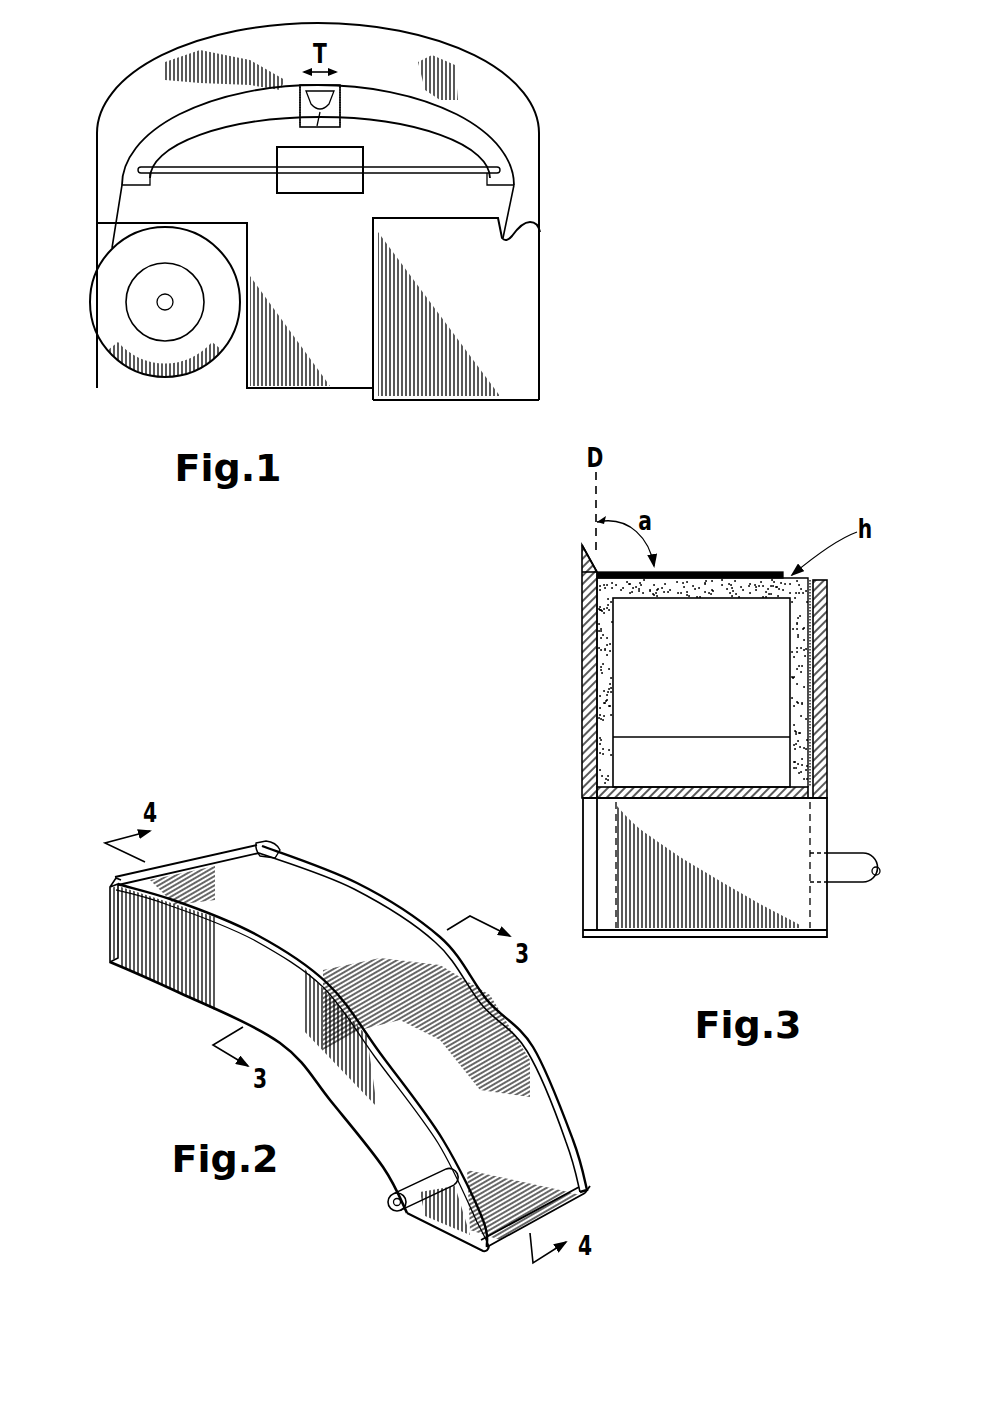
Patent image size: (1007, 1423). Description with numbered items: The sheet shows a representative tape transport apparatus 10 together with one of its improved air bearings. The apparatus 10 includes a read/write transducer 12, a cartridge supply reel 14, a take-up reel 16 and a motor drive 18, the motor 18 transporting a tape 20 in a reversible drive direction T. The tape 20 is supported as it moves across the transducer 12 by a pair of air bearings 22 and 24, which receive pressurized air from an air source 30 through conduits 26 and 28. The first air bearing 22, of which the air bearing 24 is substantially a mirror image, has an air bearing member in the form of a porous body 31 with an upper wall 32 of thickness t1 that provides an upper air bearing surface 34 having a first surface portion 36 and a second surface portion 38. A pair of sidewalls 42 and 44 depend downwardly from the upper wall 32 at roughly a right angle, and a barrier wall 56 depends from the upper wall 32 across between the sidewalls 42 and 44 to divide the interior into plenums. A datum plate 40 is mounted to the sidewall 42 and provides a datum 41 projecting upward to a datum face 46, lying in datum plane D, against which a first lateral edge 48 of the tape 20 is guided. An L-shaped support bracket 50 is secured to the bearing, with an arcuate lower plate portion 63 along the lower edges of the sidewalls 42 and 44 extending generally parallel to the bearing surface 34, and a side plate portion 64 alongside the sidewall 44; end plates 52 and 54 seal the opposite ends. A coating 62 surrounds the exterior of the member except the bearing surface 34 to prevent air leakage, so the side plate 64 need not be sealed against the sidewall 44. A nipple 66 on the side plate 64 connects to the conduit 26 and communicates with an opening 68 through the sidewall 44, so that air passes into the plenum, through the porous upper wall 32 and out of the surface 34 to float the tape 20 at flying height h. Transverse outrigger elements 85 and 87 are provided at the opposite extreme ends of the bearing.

In FIG. 1, the tape transport apparatus 10 is at (582, 107).
In FIG. 1, the read/write transducer 12 is at (322, 116).
In FIG. 1, the cartridge supply reel 14 is at (517, 298).
In FIG. 1, the take-up reel 16 is at (188, 353).
In FIG. 1, the motor drive 18 is at (232, 247).
In FIG. 1, the tape 20 is at (110, 205).
In FIG. 3, the tape 20 is at (707, 572).
In FIG. 1, the air bearing 22 is at (443, 118).
In FIG. 2, the air bearing 22 is at (370, 821).
In FIG. 3, the air bearing 22 is at (782, 490).
In FIG. 1, the air bearing 24 is at (200, 113).
In FIG. 1, the conduit 26 is at (380, 170).
In FIG. 1, the conduit 28 is at (177, 170).
In FIG. 1, the air source 30 is at (307, 183).
In FIG. 3, the porous body 31 is at (639, 606).
In FIG. 2, the upper wall 32 is at (513, 1045).
In FIG. 3, the upper wall 32 is at (692, 593).
In FIG. 2, the upper air bearing surface 34 is at (340, 920).
In FIG. 2, the first surface portion 36 is at (497, 1162).
In FIG. 2, the second surface portion 38 is at (247, 911).
In FIG. 2, the datum plate 40 is at (573, 1133).
In FIG. 3, the datum plate 40 is at (582, 618).
In FIG. 3, the datum 41 is at (582, 572).
In FIG. 3, the sidewall 42 is at (582, 697).
In FIG. 3, the sidewall 44 is at (827, 668).
In FIG. 2, the datum face 46 is at (283, 845).
In FIG. 3, the datum face 46 is at (604, 548).
In FIG. 3, the first lateral edge 48 is at (583, 582).
In FIG. 2, the L-shaped support bracket 50 is at (158, 977).
In FIG. 3, the L-shaped support bracket 50 is at (685, 910).
In FIG. 2, the end plate 52 is at (427, 1230).
In FIG. 3, the end plate 52 is at (757, 933).
In FIG. 2, the end plate 54 is at (112, 930).
In FIG. 3, the barrier wall 56 is at (773, 753).
In FIG. 3, the coating 62 is at (582, 742).
In FIG. 3, the lower plate portion 63 is at (667, 787).
In FIG. 2, the side plate portion 64 is at (242, 982).
In FIG. 3, the side plate portion 64 is at (805, 703).
In FIG. 2, the nipple 66 is at (423, 1188).
In FIG. 3, the nipple 66 is at (842, 870).
In FIG. 3, the opening 68 is at (802, 872).
In FIG. 2, the outrigger element 85 is at (557, 1207).
In FIG. 2, the outrigger element 87 is at (213, 860).